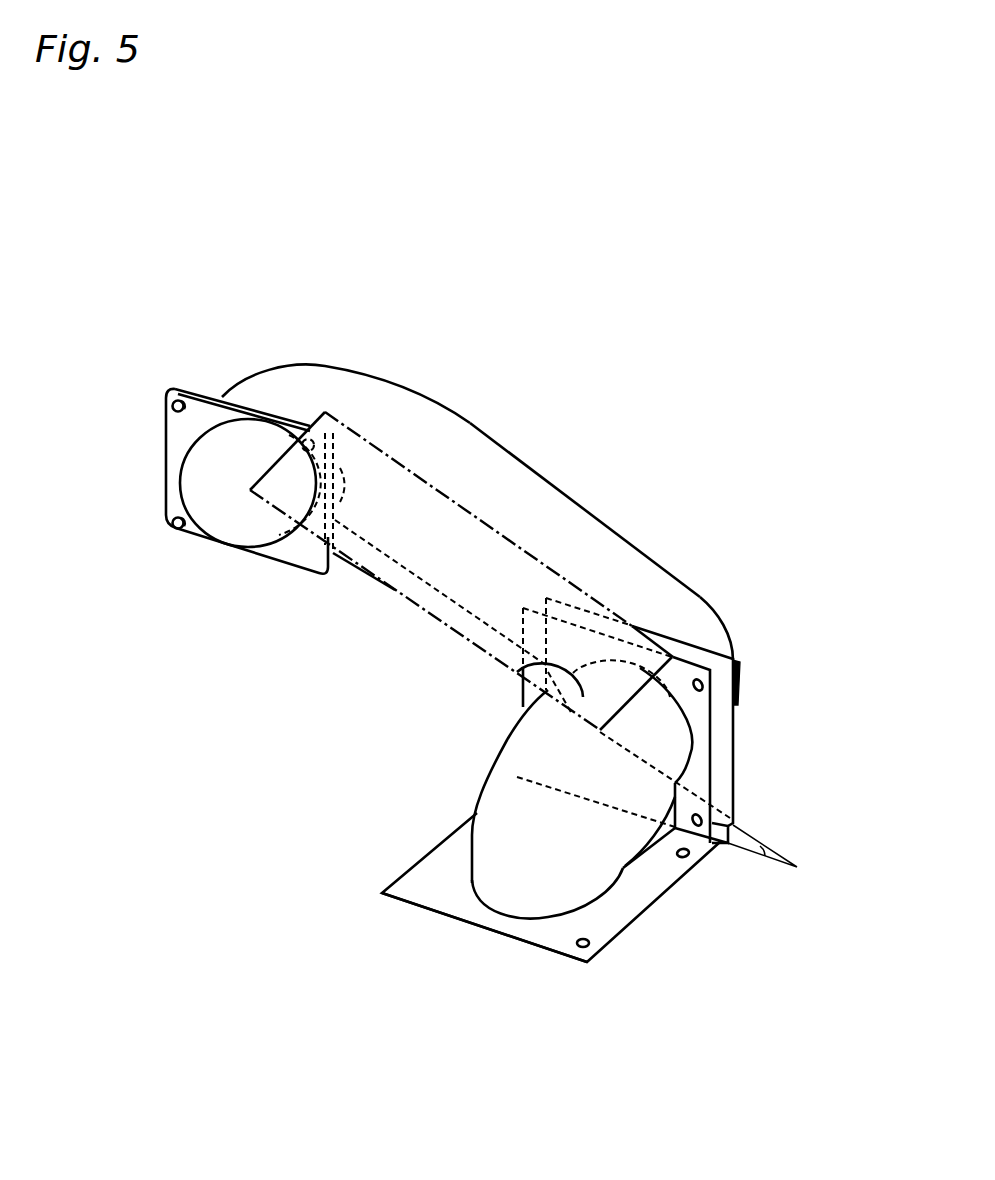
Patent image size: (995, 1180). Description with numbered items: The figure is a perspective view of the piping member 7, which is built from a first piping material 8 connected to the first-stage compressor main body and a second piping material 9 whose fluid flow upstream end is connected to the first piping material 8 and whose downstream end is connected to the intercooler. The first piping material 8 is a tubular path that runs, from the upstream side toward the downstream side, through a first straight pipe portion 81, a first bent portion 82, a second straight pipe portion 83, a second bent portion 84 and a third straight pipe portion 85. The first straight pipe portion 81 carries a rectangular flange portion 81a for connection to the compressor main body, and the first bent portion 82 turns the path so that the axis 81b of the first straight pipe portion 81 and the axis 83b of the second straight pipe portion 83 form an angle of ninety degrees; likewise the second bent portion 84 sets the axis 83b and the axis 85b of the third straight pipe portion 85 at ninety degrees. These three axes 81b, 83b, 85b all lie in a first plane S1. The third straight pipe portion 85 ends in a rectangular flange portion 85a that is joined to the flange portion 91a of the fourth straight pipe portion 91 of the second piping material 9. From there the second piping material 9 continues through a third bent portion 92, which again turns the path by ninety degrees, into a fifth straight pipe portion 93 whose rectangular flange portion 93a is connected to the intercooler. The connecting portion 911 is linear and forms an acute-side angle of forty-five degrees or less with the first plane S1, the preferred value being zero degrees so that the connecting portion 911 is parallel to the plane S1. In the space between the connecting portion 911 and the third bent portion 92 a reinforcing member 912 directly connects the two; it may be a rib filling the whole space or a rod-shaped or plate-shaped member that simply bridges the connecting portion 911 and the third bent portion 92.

The piping member 7 is at (725, 420).
The first piping material 8 is at (478, 448).
The first straight pipe portion 81 is at (260, 403).
The flange portion 81a is at (201, 388).
The axis 81b is at (273, 462).
The first bent portion 82 is at (327, 367).
The second straight pipe portion 83 is at (500, 490).
The axis 83b is at (527, 552).
The second bent portion 84 is at (682, 607).
The third straight pipe portion 85 is at (712, 640).
The flange portion 85a is at (737, 678).
The axis 85b is at (640, 705).
The second piping material 9 is at (493, 763).
The fourth straight pipe portion 91 is at (535, 682).
The flange portion 91a is at (700, 763).
The connecting portion 911 is at (700, 838).
The reinforcing member 912 is at (648, 837).
The third bent portion 92 is at (553, 763).
The fifth straight pipe portion 93 is at (535, 893).
The flange portion 93a is at (440, 895).
The first plane S1 is at (370, 473).